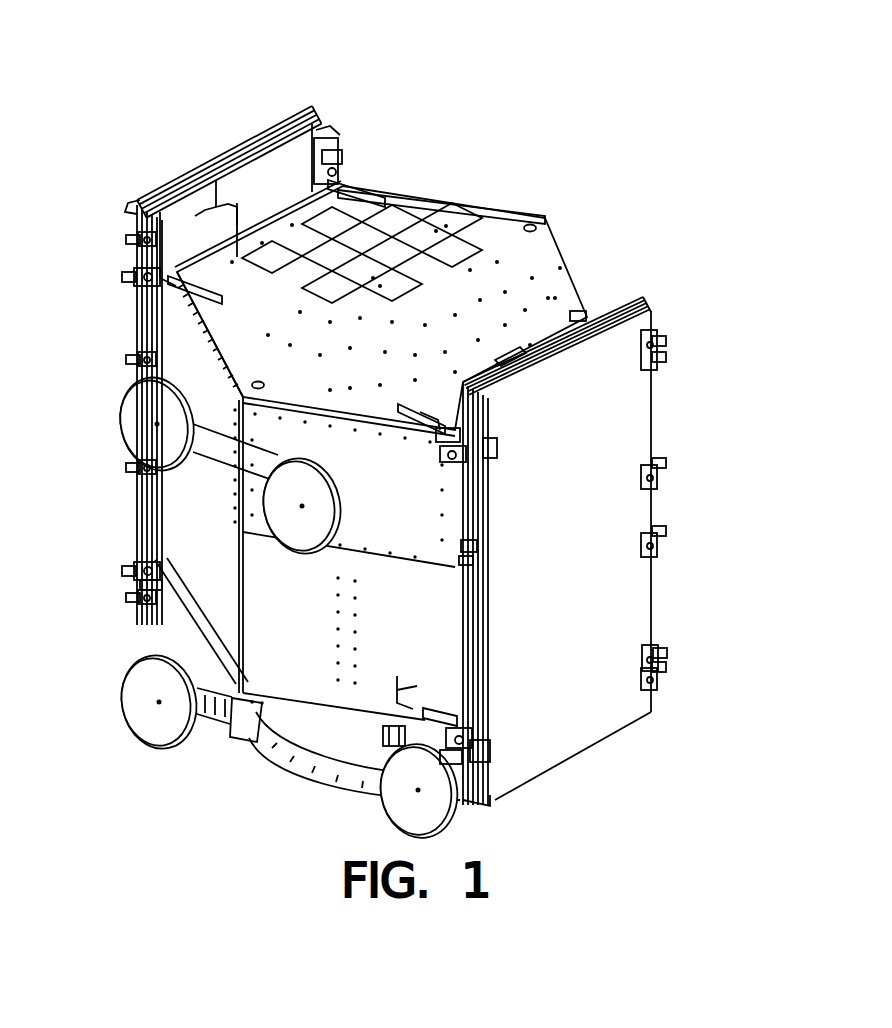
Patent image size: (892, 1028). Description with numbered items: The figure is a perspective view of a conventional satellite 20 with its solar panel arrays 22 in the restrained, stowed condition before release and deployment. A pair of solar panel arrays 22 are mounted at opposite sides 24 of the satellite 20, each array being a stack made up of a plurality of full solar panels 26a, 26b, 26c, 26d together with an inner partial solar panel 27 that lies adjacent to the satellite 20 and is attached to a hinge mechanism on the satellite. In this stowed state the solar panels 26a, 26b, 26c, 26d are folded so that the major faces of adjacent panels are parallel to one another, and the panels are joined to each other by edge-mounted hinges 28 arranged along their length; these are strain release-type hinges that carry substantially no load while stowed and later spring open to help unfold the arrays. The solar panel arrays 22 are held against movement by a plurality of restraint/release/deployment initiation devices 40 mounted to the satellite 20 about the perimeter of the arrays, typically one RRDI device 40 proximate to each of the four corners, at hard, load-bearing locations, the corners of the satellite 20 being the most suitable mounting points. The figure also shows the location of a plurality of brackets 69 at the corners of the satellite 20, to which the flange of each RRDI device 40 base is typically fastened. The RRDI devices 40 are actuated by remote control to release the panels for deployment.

The satellite 20 is at (522, 204).
The solar panel arrays 22 is at (207, 152).
The opposite sides of the satellite 24 is at (332, 183).
The full solar panel 26a is at (325, 114).
The full solar panel 26b is at (320, 110).
The full solar panel 26c is at (312, 106).
The full solar panel 26d is at (305, 103).
The inner partial solar panel 27 is at (205, 212).
The edge-mounted hinges 28 is at (133, 240).
The restraint/release/deployment initiation (RRDI) device 40 is at (334, 153).
The bracket 69 is at (375, 198).